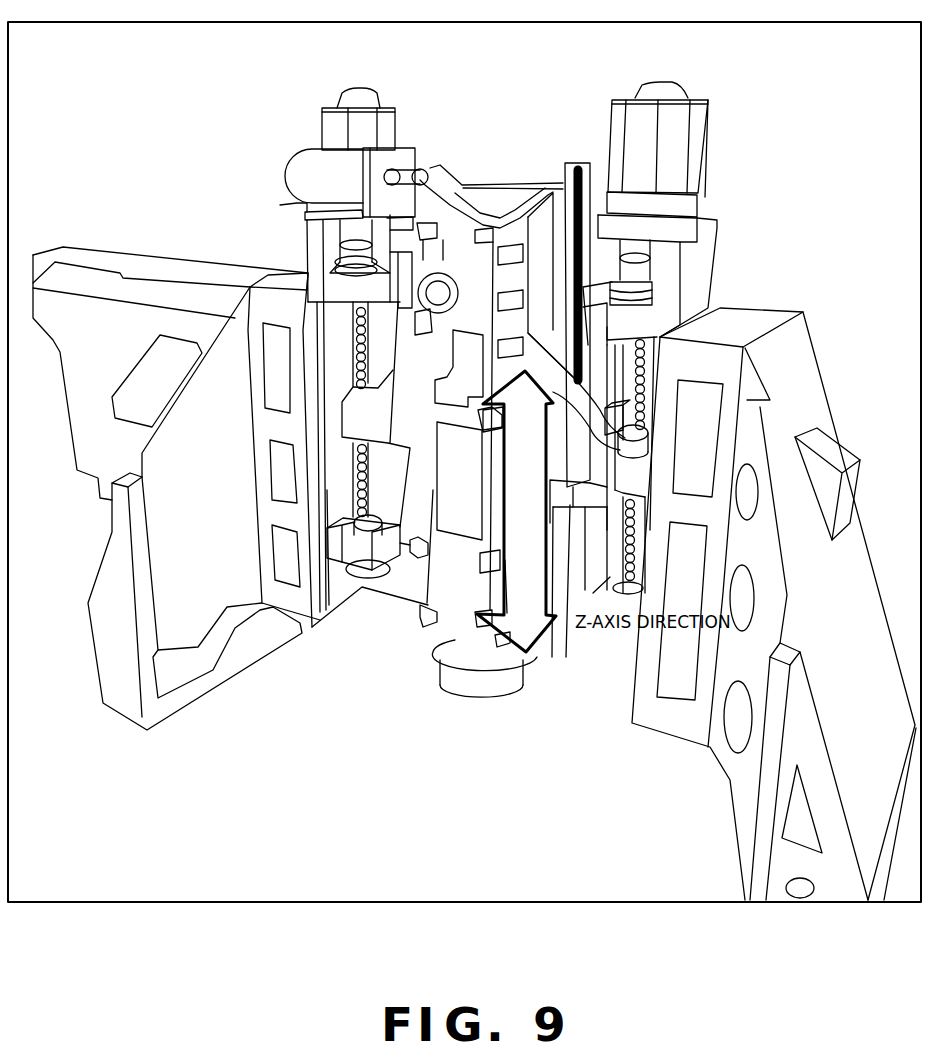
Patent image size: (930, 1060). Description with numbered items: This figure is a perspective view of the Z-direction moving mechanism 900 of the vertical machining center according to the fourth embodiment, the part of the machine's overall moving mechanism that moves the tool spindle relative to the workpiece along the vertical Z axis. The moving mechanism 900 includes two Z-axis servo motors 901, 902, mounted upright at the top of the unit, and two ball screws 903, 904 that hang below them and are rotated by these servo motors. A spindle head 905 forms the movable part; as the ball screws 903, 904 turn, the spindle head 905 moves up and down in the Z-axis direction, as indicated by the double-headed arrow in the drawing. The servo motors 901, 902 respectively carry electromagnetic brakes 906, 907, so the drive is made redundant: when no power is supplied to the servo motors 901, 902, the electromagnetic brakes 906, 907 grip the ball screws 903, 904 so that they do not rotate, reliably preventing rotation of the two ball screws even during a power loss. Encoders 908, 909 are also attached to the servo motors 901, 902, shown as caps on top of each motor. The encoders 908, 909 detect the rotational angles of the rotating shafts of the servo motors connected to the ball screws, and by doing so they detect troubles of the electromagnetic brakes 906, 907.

The Z-direction moving mechanism 900 is at (162, 168).
The Z-axis servo motor 901 is at (390, 130).
The Z-axis servo motor 902 is at (700, 127).
The ball screw 903 is at (372, 340).
The ball screw 904 is at (642, 372).
The spindle head 905 is at (453, 642).
The electromagnetic brake 906 is at (297, 205).
The electromagnetic brake 907 is at (705, 200).
The encoder 908 is at (365, 93).
The encoder 909 is at (668, 88).